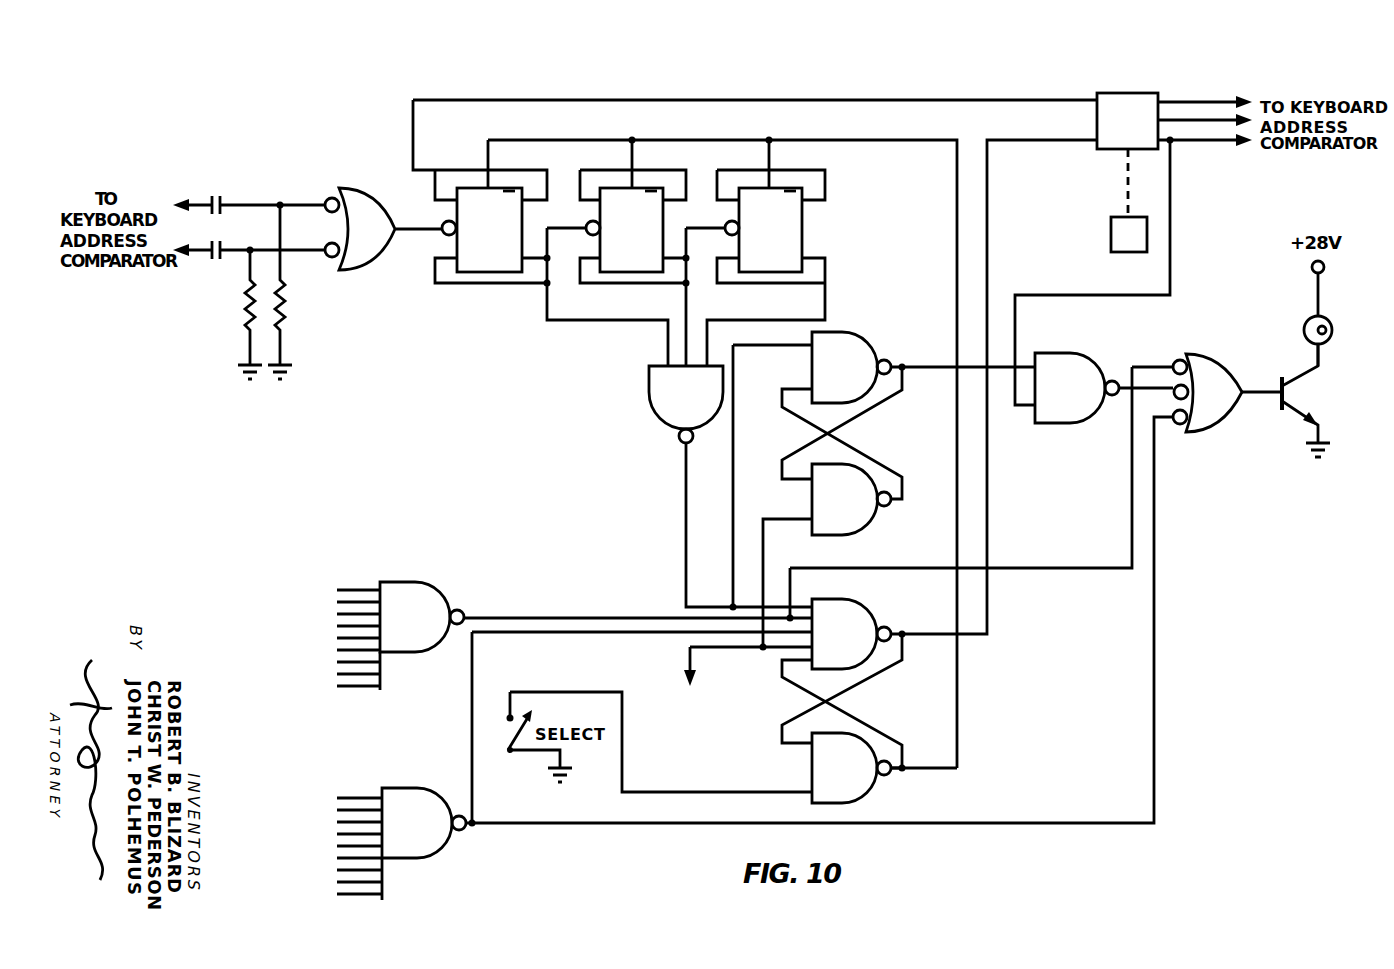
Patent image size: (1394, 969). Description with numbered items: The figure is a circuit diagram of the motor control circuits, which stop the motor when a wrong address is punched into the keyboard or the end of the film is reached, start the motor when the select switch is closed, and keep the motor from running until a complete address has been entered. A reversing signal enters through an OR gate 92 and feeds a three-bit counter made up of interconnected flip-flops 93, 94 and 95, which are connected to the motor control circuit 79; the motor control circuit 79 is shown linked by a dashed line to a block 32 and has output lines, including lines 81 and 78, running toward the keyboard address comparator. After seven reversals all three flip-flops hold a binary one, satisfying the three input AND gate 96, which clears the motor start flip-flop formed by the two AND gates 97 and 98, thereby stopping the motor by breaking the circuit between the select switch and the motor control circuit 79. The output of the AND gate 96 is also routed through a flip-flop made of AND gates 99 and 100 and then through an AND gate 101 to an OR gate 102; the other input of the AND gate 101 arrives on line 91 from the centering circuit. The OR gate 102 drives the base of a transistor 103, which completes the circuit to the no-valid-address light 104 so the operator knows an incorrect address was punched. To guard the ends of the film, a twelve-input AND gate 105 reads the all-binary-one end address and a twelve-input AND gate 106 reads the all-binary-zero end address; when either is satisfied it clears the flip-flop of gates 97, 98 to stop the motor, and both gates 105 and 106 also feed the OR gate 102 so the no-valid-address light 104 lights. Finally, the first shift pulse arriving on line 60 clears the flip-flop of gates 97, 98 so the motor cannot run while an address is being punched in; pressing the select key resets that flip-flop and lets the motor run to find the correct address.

The keyboard key 32 is at (1111, 222).
The line 60 is at (688, 662).
The line to keyboard address comparator 78 is at (1260, 162).
The motor control circuit 79 is at (1120, 93).
The line to keyboard address comparator 81 is at (1230, 84).
The line 91 is at (1200, 142).
The OR gate 92 is at (362, 270).
The flip-flop 93 is at (524, 234).
The flip-flop 94 is at (665, 234).
The flip-flop 95 is at (804, 237).
The three input AND gate 96 is at (648, 396).
The AND gate 97 is at (866, 614).
The AND gate 98 is at (862, 792).
The AND gate 99 is at (864, 350).
The AND gate 100 is at (860, 524).
The AND gate 101 is at (1076, 355).
The OR gate 102 is at (1206, 358).
The transistor 103 is at (1270, 376).
The no-valid-address light 104 is at (1306, 324).
The AND gate 105 is at (432, 592).
The AND gate 106 is at (430, 798).